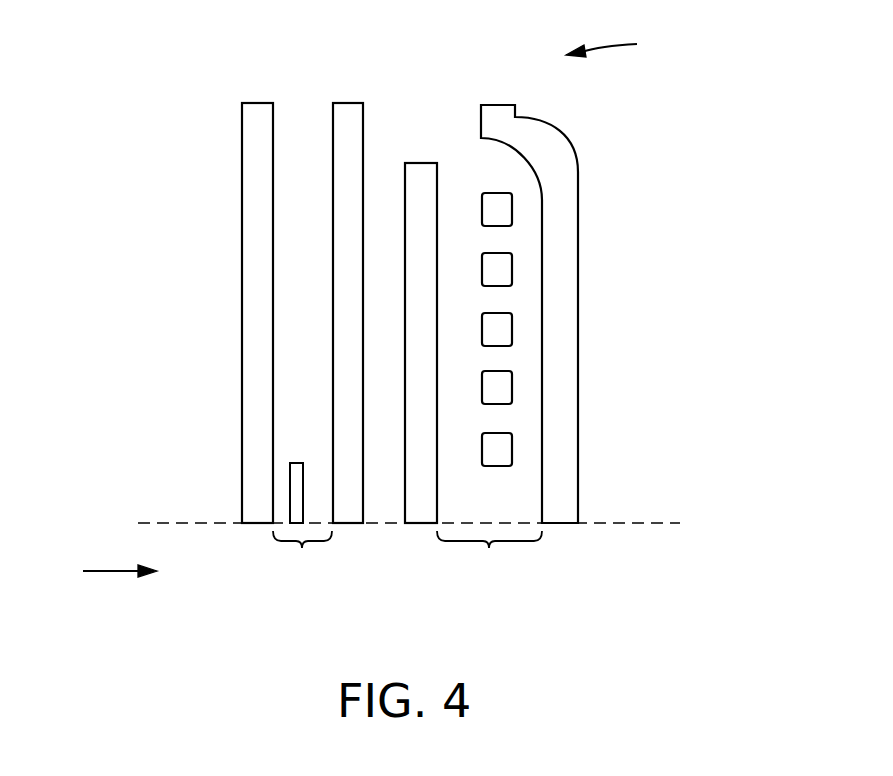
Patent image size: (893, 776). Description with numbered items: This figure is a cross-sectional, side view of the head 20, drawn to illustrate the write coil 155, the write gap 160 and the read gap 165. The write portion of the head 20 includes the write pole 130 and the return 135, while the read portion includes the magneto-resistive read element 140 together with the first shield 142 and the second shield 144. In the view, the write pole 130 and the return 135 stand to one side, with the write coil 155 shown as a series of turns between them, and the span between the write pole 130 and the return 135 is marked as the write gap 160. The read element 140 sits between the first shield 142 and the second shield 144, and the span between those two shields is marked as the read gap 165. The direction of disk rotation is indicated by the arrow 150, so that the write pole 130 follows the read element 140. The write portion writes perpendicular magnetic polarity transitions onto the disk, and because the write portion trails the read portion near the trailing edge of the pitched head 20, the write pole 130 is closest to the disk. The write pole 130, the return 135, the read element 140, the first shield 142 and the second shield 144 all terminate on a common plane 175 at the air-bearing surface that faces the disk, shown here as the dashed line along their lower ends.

The head 20 is at (621, 43).
The write pole 130 is at (564, 392).
The return 135 is at (420, 162).
The magneto-resistive read element 140 is at (293, 463).
The first shield 142 is at (337, 102).
The second shield 144 is at (254, 102).
The arrow 150 is at (120, 573).
The write coil 155 is at (503, 193).
The write gap 160 is at (489, 558).
The read gap 165 is at (302, 557).
The common plane 175 is at (624, 523).